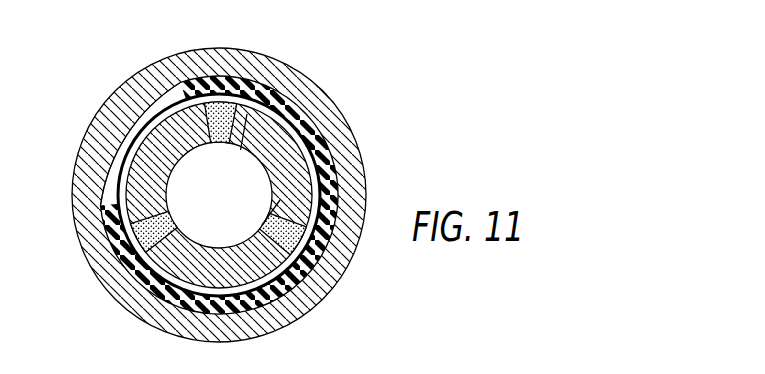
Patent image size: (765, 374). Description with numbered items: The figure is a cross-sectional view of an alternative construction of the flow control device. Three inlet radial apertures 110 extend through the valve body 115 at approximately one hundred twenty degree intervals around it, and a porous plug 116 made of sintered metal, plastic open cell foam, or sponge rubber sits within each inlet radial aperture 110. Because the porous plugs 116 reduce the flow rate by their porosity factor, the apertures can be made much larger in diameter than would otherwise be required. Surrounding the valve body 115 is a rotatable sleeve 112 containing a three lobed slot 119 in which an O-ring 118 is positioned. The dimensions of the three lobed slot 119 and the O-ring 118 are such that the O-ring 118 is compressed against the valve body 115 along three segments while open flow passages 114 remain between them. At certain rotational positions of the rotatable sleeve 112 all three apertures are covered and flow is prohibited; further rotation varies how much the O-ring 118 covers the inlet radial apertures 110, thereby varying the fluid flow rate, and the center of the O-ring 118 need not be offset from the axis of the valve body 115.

The valve body 115 is at (150, 100).
The O-ring 118 is at (268, 97).
The three lobed slot 119 is at (314, 133).
The inlet radial apertures 110 is at (282, 220).
The porous plug 116 is at (205, 283).
The rotatable sleeve 112 is at (172, 233).
The flow passages 114 is at (113, 205).